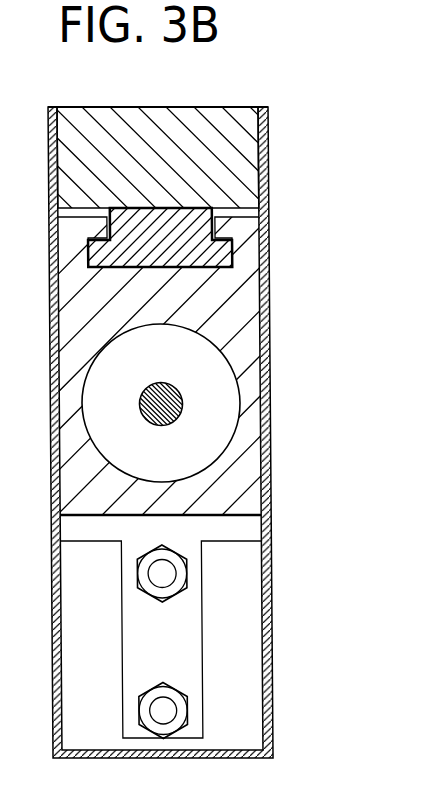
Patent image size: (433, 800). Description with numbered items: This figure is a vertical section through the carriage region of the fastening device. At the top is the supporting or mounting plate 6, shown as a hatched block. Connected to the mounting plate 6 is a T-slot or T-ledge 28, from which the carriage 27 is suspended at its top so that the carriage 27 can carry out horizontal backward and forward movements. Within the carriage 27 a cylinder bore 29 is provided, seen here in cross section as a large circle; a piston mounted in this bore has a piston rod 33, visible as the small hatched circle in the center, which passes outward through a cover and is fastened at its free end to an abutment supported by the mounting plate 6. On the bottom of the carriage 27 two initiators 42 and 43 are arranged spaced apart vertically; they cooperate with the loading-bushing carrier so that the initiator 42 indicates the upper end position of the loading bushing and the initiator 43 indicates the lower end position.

The supporting or mounting plate 6 is at (222, 156).
The carriage 27 is at (223, 322).
The T-slot or T-ledge 28 is at (191, 247).
The cylinder bore 29 is at (180, 454).
The piston rod 33 is at (166, 402).
The initiator 42 is at (165, 573).
The initiator 43 is at (167, 708).